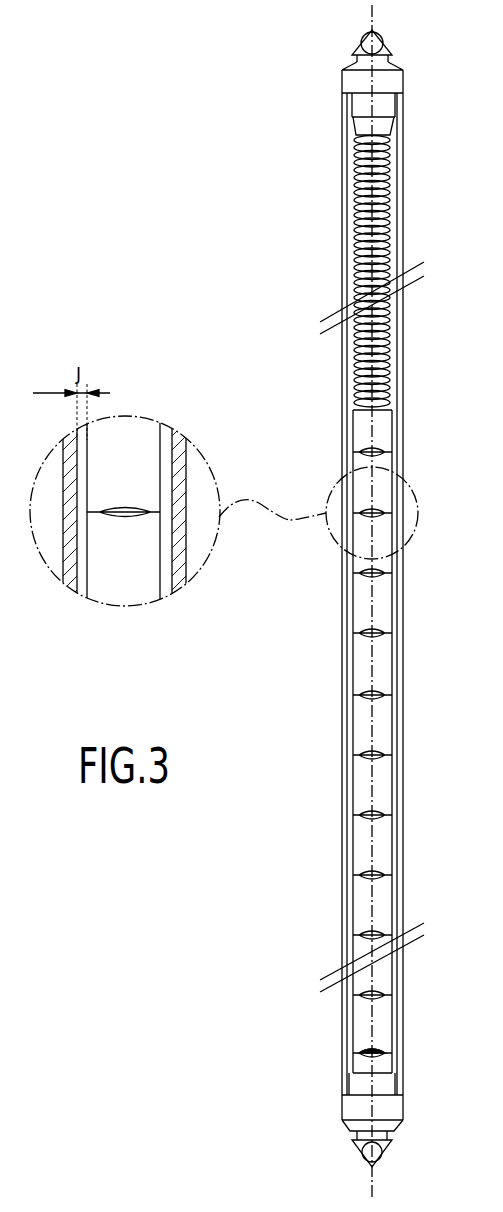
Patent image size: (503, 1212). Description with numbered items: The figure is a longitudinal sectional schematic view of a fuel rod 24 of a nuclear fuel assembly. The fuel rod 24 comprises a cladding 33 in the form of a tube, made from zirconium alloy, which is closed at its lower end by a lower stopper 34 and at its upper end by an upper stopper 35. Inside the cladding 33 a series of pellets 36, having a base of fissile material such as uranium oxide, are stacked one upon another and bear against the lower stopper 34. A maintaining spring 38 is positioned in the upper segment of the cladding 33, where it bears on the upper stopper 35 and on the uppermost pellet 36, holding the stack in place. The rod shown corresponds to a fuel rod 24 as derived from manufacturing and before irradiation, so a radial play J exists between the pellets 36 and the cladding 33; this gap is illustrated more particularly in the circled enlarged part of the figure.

The fuel rod 24 is at (418, 432).
The cladding 33 is at (400, 797).
The lower stopper 34 is at (392, 1109).
The upper stopper 35 is at (392, 86).
The pellets 36 is at (384, 612).
The maintaining spring 38 is at (395, 252).